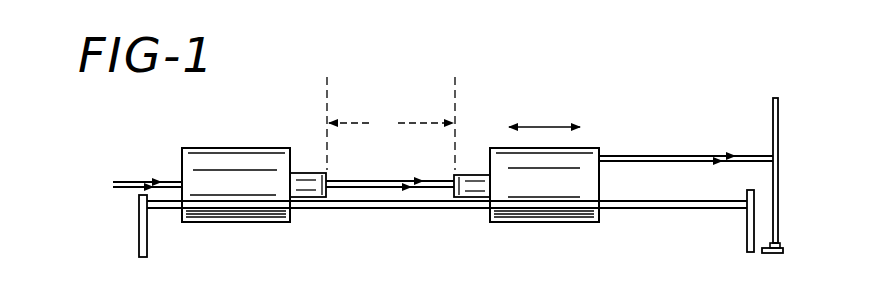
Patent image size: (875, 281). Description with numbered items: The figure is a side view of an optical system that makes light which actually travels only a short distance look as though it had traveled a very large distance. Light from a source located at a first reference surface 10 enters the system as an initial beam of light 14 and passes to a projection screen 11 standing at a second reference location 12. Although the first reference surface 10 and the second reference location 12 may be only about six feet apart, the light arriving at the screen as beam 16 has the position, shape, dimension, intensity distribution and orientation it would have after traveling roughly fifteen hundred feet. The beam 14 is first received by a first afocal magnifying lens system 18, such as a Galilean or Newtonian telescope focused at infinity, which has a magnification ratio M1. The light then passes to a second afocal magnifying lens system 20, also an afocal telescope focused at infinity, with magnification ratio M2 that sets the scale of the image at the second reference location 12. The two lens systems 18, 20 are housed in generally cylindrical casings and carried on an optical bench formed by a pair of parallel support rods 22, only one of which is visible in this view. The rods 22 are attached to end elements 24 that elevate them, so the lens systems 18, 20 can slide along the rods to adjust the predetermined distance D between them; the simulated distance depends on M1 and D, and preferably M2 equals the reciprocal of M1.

The first reference surface 10 is at (114, 165).
The projection screen 11 is at (779, 118).
The second reference location 12 is at (771, 93).
The initial beam of light 14 is at (172, 180).
The beam 16 is at (722, 154).
The first afocal magnifying lens system 18 is at (248, 148).
The second afocal magnifying lens system 20 is at (577, 148).
The parallel support rods 22 is at (652, 209).
The end elements 24 is at (147, 237).